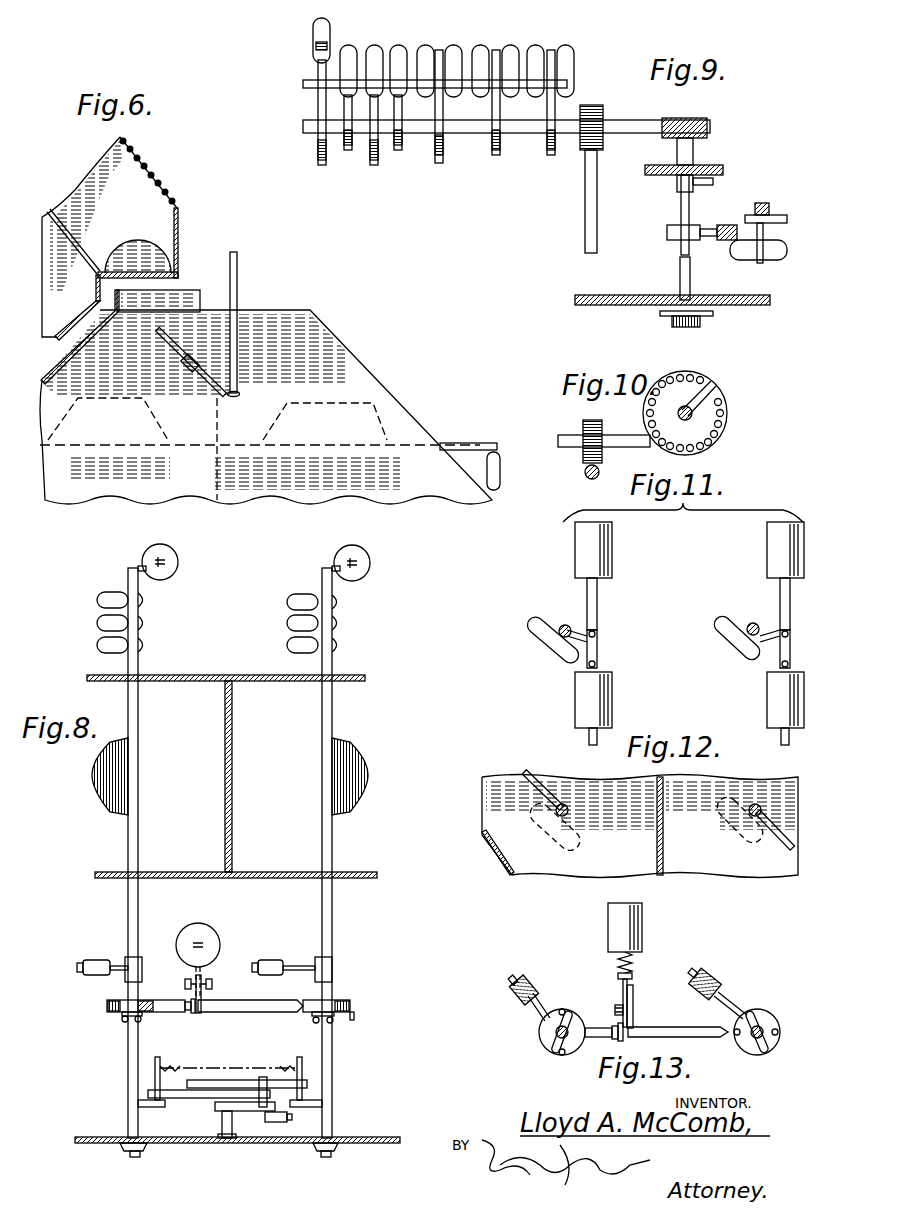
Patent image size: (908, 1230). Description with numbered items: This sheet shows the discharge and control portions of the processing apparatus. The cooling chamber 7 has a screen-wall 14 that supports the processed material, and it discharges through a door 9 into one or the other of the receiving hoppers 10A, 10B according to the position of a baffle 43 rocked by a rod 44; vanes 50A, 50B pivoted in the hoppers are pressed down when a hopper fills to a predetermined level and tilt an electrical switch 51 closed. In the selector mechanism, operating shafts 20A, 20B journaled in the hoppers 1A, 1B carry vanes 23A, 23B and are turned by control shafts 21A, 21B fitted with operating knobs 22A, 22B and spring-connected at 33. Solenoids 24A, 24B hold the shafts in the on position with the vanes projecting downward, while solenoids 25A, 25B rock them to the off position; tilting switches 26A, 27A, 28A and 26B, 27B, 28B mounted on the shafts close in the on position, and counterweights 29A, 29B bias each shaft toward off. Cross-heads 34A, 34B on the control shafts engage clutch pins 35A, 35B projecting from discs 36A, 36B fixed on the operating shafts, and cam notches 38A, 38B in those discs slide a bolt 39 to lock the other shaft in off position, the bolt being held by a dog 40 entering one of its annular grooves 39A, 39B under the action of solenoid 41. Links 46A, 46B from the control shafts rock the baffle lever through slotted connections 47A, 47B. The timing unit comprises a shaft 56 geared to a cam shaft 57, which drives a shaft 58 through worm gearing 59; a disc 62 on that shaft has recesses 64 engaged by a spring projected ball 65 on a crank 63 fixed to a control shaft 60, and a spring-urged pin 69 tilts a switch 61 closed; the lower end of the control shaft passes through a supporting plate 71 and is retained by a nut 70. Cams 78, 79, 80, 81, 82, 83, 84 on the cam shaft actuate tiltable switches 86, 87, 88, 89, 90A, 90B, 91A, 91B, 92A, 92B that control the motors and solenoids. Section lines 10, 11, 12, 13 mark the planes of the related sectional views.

In FIG. 6, the cooling chamber 7 is at (130, 190).
In FIG. 6, the screen-wall 14 is at (66, 236).
In FIG. 6, the door 9 is at (158, 268).
In FIG. 6, the baffle 43 is at (176, 350).
In FIG. 6, the rod 44 is at (239, 306).
In FIG. 6, the vane 50A is at (152, 425).
In FIG. 6, the vane 50B is at (388, 402).
In FIG. 6, the tiltable electrical switch 51 is at (500, 470).
In FIG. 6, the receiving hopper 10A is at (130, 490).
In FIG. 6, the receiving hopper 10B is at (400, 488).
In FIG. 9, the switch 86 is at (313, 34).
In FIG. 9, the switch 87 is at (348, 45).
In FIG. 9, the switch 88 is at (375, 45).
In FIG. 9, the switch 89 is at (400, 45).
In FIG. 9, the switch 90A is at (435, 35).
In FIG. 9, the switch 90B is at (455, 45).
In FIG. 9, the switch 91A is at (482, 45).
In FIG. 9, the switch 91B is at (512, 45).
In FIG. 9, the switch 92A is at (540, 47).
In FIG. 9, the switch 92B is at (574, 52).
In FIG. 9, the cam 78 is at (320, 165).
In FIG. 9, the cam 79 is at (347, 150).
In FIG. 9, the cam 80 is at (374, 165).
In FIG. 9, the cam 81 is at (399, 150).
In FIG. 9, the cam 82 is at (439, 163).
In FIG. 9, the cam 83 is at (496, 155).
In FIG. 9, the cam 84 is at (551, 155).
In FIG. 9, the cam shaft 57 is at (526, 133).
In FIG. 10, the cam shaft 57 is at (563, 437).
In FIG. 9, the section line 10- 10 is at (572, 188).
In FIG. 9, the shaft 56 is at (585, 222).
In FIG. 10, the shaft 56 is at (588, 478).
In FIG. 9, the worm gearing 59 is at (698, 118).
In FIG. 9, the shaft 58 is at (694, 151).
In FIG. 9, the spring projected ball 65 is at (682, 167).
In FIG. 9, the disc 62 is at (723, 170).
In FIG. 10, the disc 62 is at (644, 414).
In FIG. 9, the crank 63 is at (706, 192).
In FIG. 10, the crank 63 is at (718, 392).
In FIG. 9, the control shaft 60 is at (680, 271).
In FIG. 10, the control shaft 60 is at (706, 424).
In FIG. 9, the spring-urged pin 69 is at (720, 241).
In FIG. 9, the tiltable electrical switch 61 is at (776, 259).
In FIG. 9, the base plate 71 is at (657, 308).
In FIG. 9, the nut 70 is at (713, 321).
In FIG. 10, the recesses 64 is at (698, 377).
In FIG. 11, the electrical solenoid 24A is at (600, 562).
In FIG. 8, the electrical solenoid 24A is at (167, 558).
In FIG. 11, the electrical solenoid 25A is at (605, 702).
In FIG. 11, the electrical solenoid 24B is at (780, 693).
In FIG. 11, the electrical solenoid 25B is at (780, 536).
In FIG. 8, the electrical solenoid 25B is at (366, 558).
In FIG. 11, the shaft 20A is at (560, 624).
In FIG. 12, the shaft 20A is at (563, 803).
In FIG. 8, the shaft 20A is at (138, 908).
In FIG. 11, the shaft 20B is at (748, 622).
In FIG. 12, the shaft 20B is at (758, 803).
In FIG. 8, the shaft 20B is at (332, 922).
In FIG. 11, the switch 26A is at (548, 644).
In FIG. 8, the switch 26A is at (148, 647).
In FIG. 11, the switch 26B is at (735, 640).
In FIG. 8, the switch 26B is at (288, 648).
In FIG. 12, the vane 23A is at (528, 770).
In FIG. 8, the vane 23A is at (128, 774).
In FIG. 12, the vane 23B is at (786, 846).
In FIG. 8, the vane 23B is at (355, 766).
In FIG. 12, the hopper 1A is at (556, 876).
In FIG. 8, the hopper 1A is at (169, 824).
In FIG. 12, the hopper 1B is at (735, 876).
In FIG. 8, the hopper 1B is at (266, 824).
In FIG. 13, the electrical solenoid 41 is at (632, 935).
In FIG. 8, the electrical solenoid 41 is at (204, 924).
In FIG. 13, the counterweight 29A is at (545, 978).
In FIG. 8, the counterweight 29A is at (96, 960).
In FIG. 13, the counterweight 29B is at (712, 970).
In FIG. 8, the counterweight 29B is at (275, 960).
In FIG. 13, the cam notch 38A is at (585, 1027).
In FIG. 13, the cam notch 38B is at (748, 1014).
In FIG. 13, the dog 40 is at (634, 1020).
In FIG. 8, the dog 40 is at (203, 1000).
In FIG. 13, the bolt 39 is at (660, 1028).
In FIG. 8, the bolt 39 is at (257, 1003).
In FIG. 13, the annular groove 39A is at (605, 1037).
In FIG. 8, the annular groove 39A is at (185, 1012).
In FIG. 13, the annular groove 39B is at (630, 1037).
In FIG. 8, the annular groove 39B is at (198, 1012).
In FIG. 13, the disc 36A is at (540, 1030).
In FIG. 8, the disc 36A is at (116, 1000).
In FIG. 13, the disc 36B is at (770, 1020).
In FIG. 8, the disc 36B is at (308, 1003).
In FIG. 13, the cross-head 34A is at (553, 1050).
In FIG. 8, the cross-head 34A is at (124, 1022).
In FIG. 13, the cross-head 34B is at (757, 1054).
In FIG. 8, the cross-head 34B is at (335, 999).
In FIG. 13, the clutch pins 35A is at (568, 1056).
In FIG. 8, the clutch pins 35A is at (140, 1000).
In FIG. 13, the clutch pins 35B is at (770, 1052).
In FIG. 8, the clutch pins 35B is at (305, 1013).
In FIG. 8, the switch 28A is at (148, 603).
In FIG. 8, the switch 27A is at (148, 625).
In FIG. 8, the switch 28B is at (288, 604).
In FIG. 8, the switch 27B is at (288, 625).
In FIG. 8, the section line 11- 11 is at (77, 649).
In FIG. 8, the section line 12- 12 is at (82, 820).
In FIG. 8, the section line 13- 13 is at (86, 1025).
In FIG. 8, the control shaft 21A is at (128, 1069).
In FIG. 8, the control shaft 21B is at (332, 1082).
In FIG. 8, the operating knob 22A is at (130, 1158).
In FIG. 8, the operating knob 22B is at (327, 1158).
In FIG. 8, the spring connection 33 is at (172, 1064).
In FIG. 8, the link 46A is at (160, 1107).
In FIG. 8, the link 46B is at (292, 1107).
In FIG. 8, the slotted connection 47A is at (200, 1098).
In FIG. 8, the slotted connection 47B is at (222, 1080).